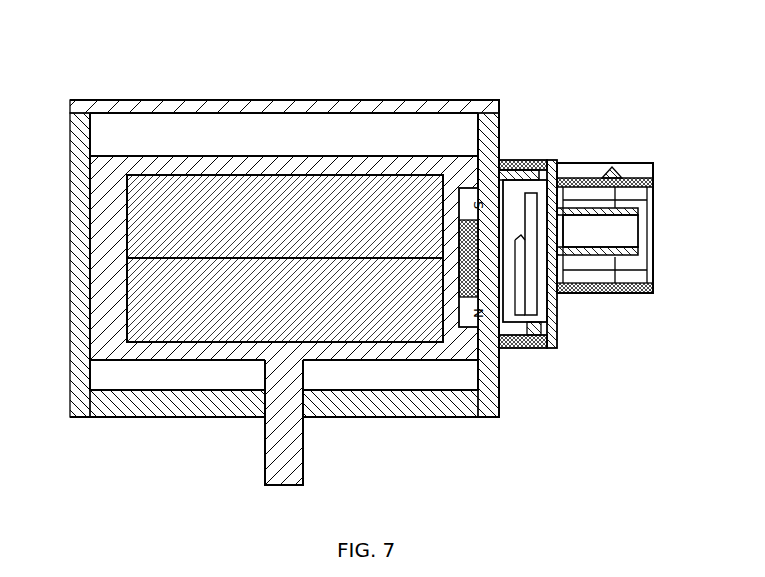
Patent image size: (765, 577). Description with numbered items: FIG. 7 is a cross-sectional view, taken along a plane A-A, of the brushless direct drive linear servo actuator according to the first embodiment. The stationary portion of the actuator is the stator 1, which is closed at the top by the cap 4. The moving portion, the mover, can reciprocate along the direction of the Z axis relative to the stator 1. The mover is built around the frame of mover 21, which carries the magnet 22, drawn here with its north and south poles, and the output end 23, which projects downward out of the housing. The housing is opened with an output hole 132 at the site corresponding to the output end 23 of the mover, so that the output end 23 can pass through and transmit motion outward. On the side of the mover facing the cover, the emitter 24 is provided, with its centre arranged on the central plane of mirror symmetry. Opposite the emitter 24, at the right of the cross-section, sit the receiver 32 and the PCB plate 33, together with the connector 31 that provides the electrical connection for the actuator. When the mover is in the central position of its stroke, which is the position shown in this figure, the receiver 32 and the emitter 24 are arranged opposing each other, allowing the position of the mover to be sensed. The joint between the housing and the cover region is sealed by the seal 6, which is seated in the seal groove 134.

The stator 1 is at (284, 285).
The cap 4 is at (284, 76).
The output hole 132 is at (284, 429).
The frame of mover 21 is at (284, 266).
The magnet 22 is at (264, 192).
The output end 23 is at (344, 422).
The seal 6 is at (570, 118).
The emitter 24 is at (580, 411).
The seal groove 134 is at (612, 301).
The receiver 32 is at (614, 275).
The PCB plate 33 is at (605, 147).
The connector 31 is at (617, 257).